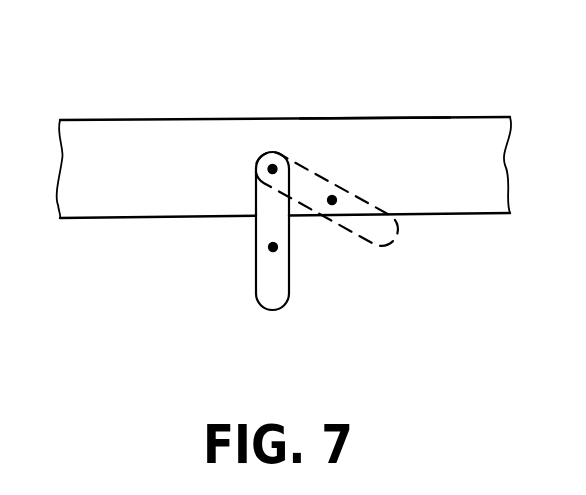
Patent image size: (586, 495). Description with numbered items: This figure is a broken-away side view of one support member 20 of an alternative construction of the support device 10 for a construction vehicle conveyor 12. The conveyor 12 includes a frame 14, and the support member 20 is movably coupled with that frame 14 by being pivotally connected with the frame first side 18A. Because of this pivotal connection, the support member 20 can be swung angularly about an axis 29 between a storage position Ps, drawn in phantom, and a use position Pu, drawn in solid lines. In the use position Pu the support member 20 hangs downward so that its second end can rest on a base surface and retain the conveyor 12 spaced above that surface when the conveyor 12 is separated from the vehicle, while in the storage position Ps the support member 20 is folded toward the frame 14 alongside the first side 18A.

The support device 10 is at (192, 297).
The conveyor 12 is at (173, 113).
The frame 14 is at (372, 127).
The first side 18A is at (448, 142).
The support member 20 is at (257, 241).
The axis 29 is at (277, 169).
The storage position Ps is at (336, 197).
The use position Pu is at (277, 247).